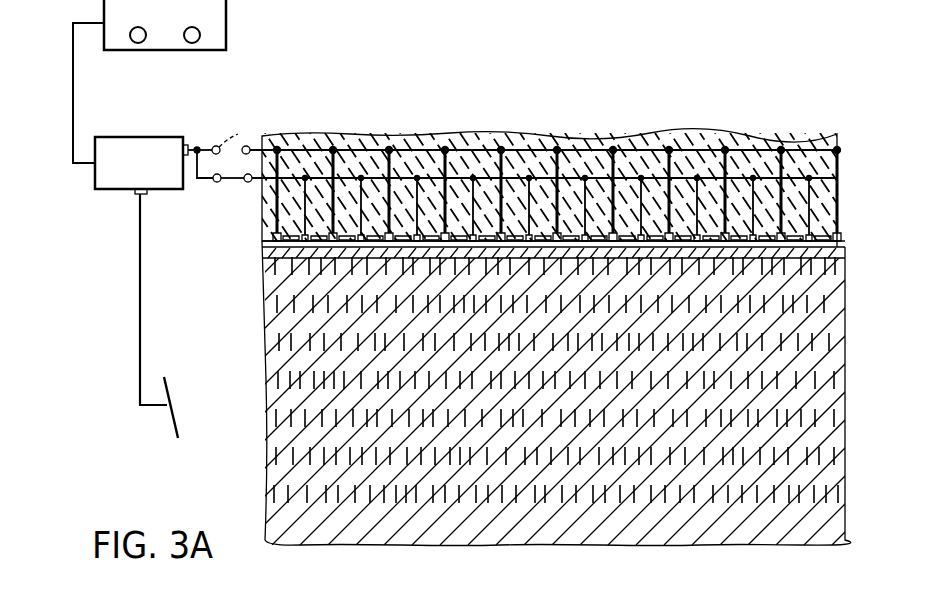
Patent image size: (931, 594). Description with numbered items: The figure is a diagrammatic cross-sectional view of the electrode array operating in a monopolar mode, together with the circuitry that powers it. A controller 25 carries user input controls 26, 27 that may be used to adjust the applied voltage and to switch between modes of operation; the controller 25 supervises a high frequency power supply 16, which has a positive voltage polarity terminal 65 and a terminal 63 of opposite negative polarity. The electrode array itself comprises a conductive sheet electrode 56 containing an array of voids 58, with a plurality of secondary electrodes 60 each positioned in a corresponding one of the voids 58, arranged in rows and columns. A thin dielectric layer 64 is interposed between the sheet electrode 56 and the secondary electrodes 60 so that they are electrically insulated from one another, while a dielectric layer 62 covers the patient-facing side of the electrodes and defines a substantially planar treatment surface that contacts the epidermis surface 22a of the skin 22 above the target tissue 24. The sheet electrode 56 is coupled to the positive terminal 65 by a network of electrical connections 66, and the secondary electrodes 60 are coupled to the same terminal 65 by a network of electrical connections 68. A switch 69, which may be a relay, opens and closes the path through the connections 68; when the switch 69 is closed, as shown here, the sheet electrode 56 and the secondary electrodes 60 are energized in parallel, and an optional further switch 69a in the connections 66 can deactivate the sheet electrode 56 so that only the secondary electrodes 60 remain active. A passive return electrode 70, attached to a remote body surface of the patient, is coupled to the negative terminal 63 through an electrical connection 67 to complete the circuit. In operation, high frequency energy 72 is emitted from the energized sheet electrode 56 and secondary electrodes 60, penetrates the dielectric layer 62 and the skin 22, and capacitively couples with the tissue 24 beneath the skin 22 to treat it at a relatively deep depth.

The controller 25 is at (227, 27).
The control 26 is at (138, 43).
The control 27 is at (192, 43).
The high frequency power supply 16 is at (113, 136).
The positive voltage polarity terminal 65 is at (193, 147).
The switch 69a is at (238, 134).
The electrical connections 66 is at (258, 147).
The switch 69 is at (233, 182).
The electrical connections 68 is at (198, 183).
The negative voltage polarity terminal 63 is at (148, 194).
The electrical connection 67 is at (138, 319).
The return electrode 70 is at (174, 390).
The dielectric layer 64 is at (413, 157).
The voids 58 is at (612, 233).
The sheet electrode 56 is at (783, 233).
The secondary electrodes 60 is at (330, 250).
The dielectric layer 62 is at (268, 249).
The epidermis surface 22a is at (836, 241).
The skin 22 is at (840, 254).
The tissue 24 is at (840, 302).
The high frequency energy 72 is at (355, 427).